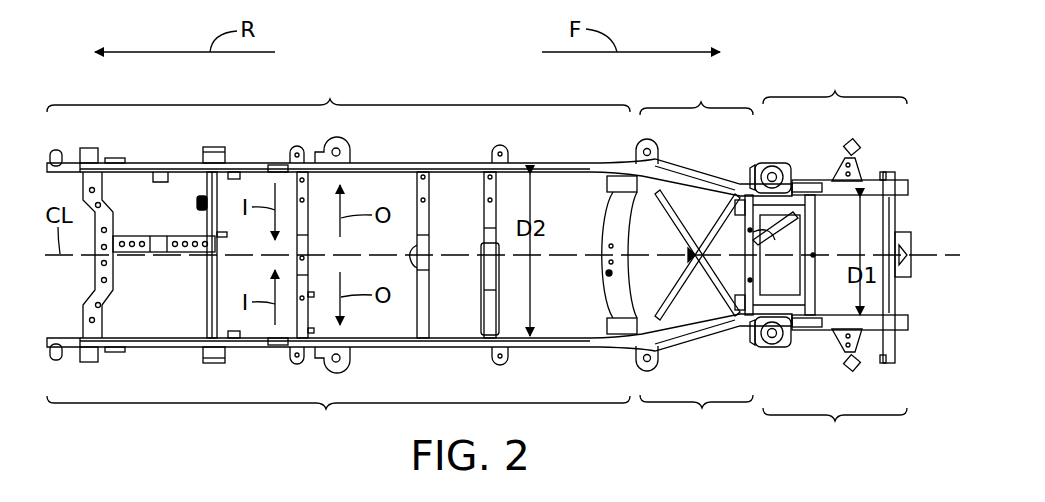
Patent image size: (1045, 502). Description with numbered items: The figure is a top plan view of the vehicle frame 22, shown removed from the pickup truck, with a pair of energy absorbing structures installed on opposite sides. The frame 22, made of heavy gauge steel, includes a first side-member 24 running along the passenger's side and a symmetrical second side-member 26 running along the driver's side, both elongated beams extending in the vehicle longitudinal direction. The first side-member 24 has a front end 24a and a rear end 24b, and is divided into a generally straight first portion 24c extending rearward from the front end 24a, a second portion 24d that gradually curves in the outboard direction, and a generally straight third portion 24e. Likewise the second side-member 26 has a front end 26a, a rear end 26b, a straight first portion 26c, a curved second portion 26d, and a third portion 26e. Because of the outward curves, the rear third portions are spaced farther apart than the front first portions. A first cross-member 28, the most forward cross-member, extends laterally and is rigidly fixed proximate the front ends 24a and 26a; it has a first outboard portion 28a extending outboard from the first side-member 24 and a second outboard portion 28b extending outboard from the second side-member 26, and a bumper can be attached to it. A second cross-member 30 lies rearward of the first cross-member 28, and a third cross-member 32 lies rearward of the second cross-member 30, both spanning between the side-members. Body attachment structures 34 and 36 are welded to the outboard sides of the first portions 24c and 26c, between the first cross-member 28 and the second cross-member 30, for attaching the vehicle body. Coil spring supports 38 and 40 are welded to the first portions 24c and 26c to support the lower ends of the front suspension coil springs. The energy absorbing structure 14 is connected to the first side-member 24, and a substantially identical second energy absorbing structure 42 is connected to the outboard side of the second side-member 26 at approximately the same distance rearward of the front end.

The energy absorbing structure 14 is at (847, 371).
The frame 22 is at (800, 50).
The first side-member 24 is at (378, 347).
The front end 24a is at (902, 330).
The rear end 24b is at (47, 345).
The first portion 24c is at (835, 432).
The second portion 24d is at (696, 418).
The third portion 24e is at (338, 420).
The second side-member 26 is at (378, 163).
The front end 26a is at (902, 182).
The rear end 26b is at (47, 165).
The first portion 26c is at (835, 82).
The second portion 26d is at (696, 94).
The third portion 26e is at (338, 92).
The first cross-member 28 is at (897, 292).
The first outboard portion 28a is at (885, 363).
The second outboard portion 28b is at (885, 172).
The second cross-member 30 is at (816, 270).
The third cross-member 32 is at (603, 290).
The body attachment structure 34 is at (840, 342).
The body attachment structure 36 is at (840, 170).
The coil spring support 38 is at (775, 163).
The coil spring support 40 is at (775, 347).
The second energy absorbing structure 42 is at (847, 140).